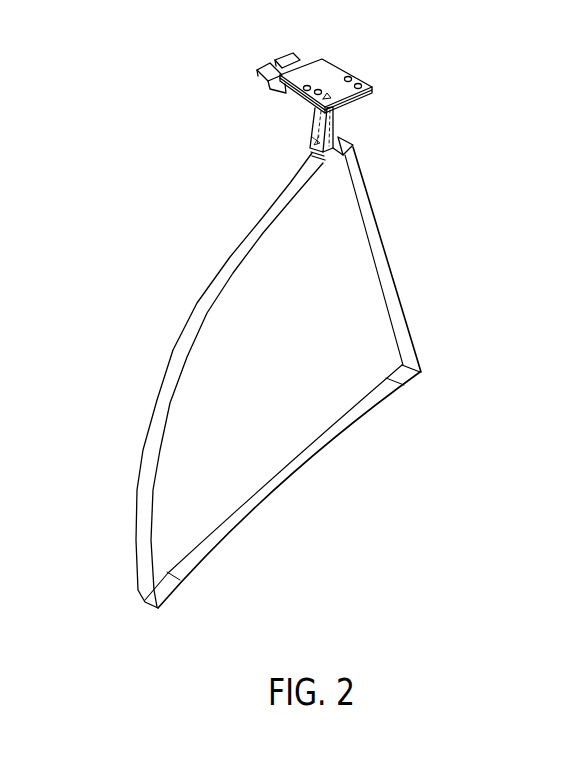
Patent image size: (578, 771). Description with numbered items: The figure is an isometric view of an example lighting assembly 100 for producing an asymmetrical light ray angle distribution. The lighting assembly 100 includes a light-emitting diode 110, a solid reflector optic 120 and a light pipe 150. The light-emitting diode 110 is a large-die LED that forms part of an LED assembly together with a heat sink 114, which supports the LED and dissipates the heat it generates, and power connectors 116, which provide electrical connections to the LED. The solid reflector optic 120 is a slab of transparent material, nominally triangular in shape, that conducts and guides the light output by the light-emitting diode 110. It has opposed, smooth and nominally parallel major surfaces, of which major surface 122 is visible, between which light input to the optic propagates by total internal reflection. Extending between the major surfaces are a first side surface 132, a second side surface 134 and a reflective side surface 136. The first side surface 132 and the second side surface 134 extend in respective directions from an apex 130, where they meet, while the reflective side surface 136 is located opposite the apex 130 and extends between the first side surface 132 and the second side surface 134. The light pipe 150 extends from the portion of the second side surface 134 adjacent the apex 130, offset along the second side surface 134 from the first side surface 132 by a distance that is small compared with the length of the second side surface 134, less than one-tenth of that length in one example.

The lighting assembly 100 is at (170, 237).
The light-emitting diode 110 is at (375, 85).
The heat sink 114 is at (345, 75).
The power connectors 116 is at (250, 73).
The light pipe 150 is at (343, 120).
The apex 130 is at (355, 143).
The first side surface 132 is at (375, 240).
The major surface 122 is at (352, 270).
The solid reflector optic 120 is at (312, 372).
The second side surface 134 is at (183, 350).
The reflective side surface 136 is at (260, 492).